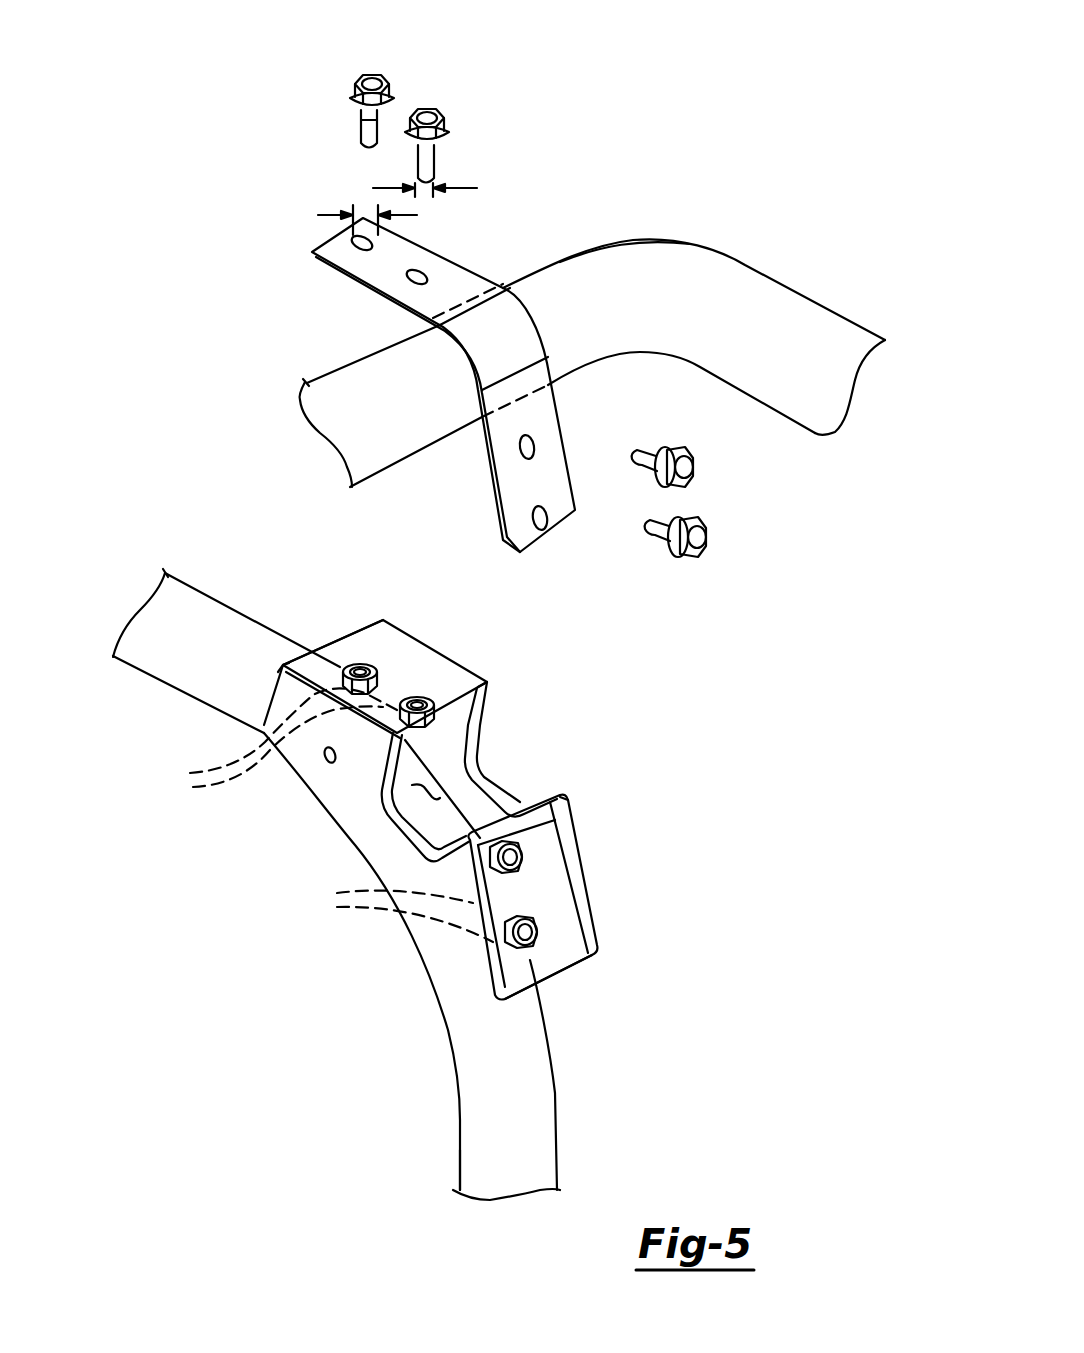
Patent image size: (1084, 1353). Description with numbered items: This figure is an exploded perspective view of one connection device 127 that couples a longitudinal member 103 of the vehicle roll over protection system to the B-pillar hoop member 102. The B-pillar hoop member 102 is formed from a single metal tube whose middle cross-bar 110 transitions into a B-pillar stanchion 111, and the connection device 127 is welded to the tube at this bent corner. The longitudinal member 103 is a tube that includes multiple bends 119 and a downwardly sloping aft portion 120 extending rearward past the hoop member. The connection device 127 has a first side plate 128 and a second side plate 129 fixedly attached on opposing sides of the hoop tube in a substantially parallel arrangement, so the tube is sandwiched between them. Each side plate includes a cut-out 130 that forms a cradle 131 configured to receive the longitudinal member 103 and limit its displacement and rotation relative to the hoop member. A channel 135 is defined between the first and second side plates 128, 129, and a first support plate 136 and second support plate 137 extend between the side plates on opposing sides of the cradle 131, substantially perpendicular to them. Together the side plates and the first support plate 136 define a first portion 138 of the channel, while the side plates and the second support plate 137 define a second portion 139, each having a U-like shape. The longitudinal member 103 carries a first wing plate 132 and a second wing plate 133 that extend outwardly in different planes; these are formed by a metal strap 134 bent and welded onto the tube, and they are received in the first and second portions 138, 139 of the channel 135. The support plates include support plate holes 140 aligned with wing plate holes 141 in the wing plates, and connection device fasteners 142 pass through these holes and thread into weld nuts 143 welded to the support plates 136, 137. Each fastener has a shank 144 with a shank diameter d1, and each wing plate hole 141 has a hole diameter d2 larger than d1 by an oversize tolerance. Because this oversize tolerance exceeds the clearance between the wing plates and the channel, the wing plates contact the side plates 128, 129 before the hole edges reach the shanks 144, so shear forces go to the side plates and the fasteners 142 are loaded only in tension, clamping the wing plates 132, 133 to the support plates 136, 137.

The B-pillar hoop member 102 is at (455, 1128).
The longitudinal member 103 is at (337, 393).
The middle cross-bar 110 is at (190, 612).
The B-pillar stanchion 111 is at (527, 1133).
The bend 119 is at (673, 260).
The downwardly sloping aft portion 120 is at (798, 325).
The connection device 127 is at (660, 935).
The first side plate 128 is at (447, 947).
The second side plate 129 is at (487, 678).
The cut-out 130 is at (513, 808).
The cradle 131 is at (525, 730).
The first wing plate 132 is at (460, 283).
The second wing plate 133 is at (545, 413).
The metal strap 134 is at (522, 337).
The channel 135 is at (437, 797).
The first support plate 136 is at (395, 662).
The second support plate 137 is at (545, 885).
The first portion of the channel 138 is at (333, 648).
The second portion of the channel 139 is at (552, 970).
The support plate hole 140 is at (362, 665).
The wing plate hole 141 is at (530, 448).
The connection device fastener 142 is at (430, 117).
The weld nut 143 is at (317, 815).
The shank 144 is at (420, 163).
The shank diameter d1 is at (463, 188).
The hole diameter d2 is at (313, 215).